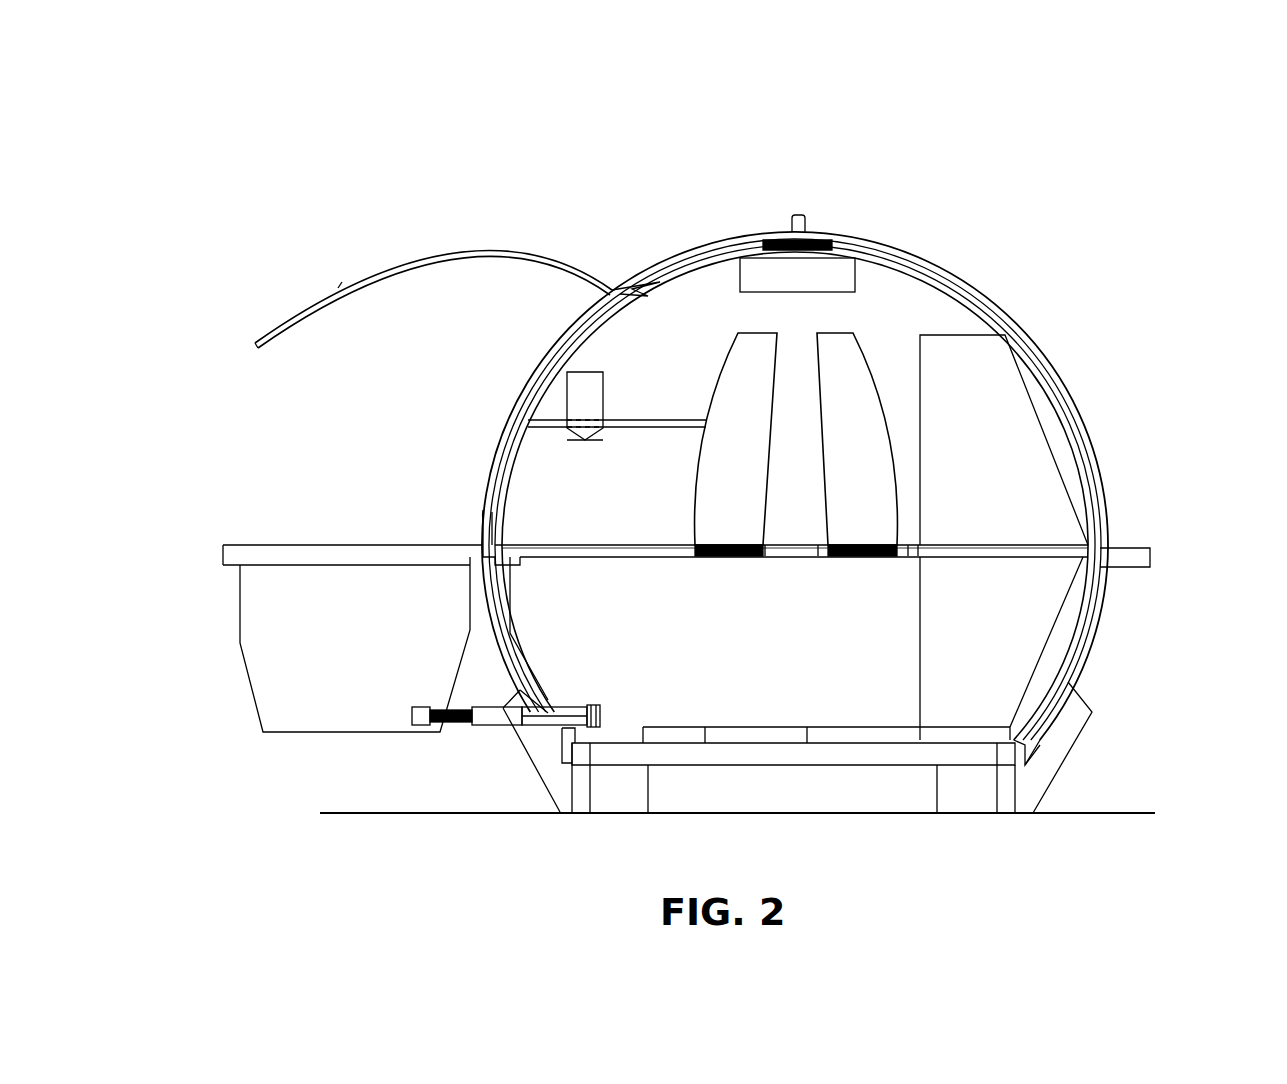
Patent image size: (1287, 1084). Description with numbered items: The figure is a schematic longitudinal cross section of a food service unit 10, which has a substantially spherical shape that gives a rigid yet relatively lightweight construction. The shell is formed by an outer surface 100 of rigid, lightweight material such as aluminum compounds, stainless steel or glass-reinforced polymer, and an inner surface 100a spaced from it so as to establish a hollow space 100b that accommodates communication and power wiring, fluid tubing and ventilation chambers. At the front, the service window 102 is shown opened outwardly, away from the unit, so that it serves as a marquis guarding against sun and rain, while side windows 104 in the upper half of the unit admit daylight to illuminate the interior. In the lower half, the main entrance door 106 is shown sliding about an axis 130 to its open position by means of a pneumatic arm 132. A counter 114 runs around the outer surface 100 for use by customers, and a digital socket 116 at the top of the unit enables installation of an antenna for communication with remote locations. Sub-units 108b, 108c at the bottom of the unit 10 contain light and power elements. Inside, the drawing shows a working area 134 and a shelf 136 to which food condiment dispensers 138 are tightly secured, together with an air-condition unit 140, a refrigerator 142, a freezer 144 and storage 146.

The unit 10 is at (1114, 166).
The outer surface 100 is at (856, 498).
The inner surface 100a is at (1047, 380).
The hollow space 100b is at (1077, 423).
The service window 102 is at (382, 264).
The side windows 104 is at (835, 362).
The main entrance door 106 is at (290, 687).
The sub-unit 108b is at (553, 775).
The sub-unit 108c is at (1048, 748).
The counter 114 is at (278, 553).
The digital socket 116 is at (807, 225).
The axis 130 is at (487, 553).
The pneumatic arm 132 is at (477, 720).
The working area 134 is at (570, 543).
The shelf 136 is at (540, 420).
The food condiment dispensers 138 is at (585, 392).
The air-condition unit 140 is at (842, 278).
The refrigerator 142 is at (1048, 487).
The freezer 144 is at (1038, 605).
The storage 146 is at (832, 675).